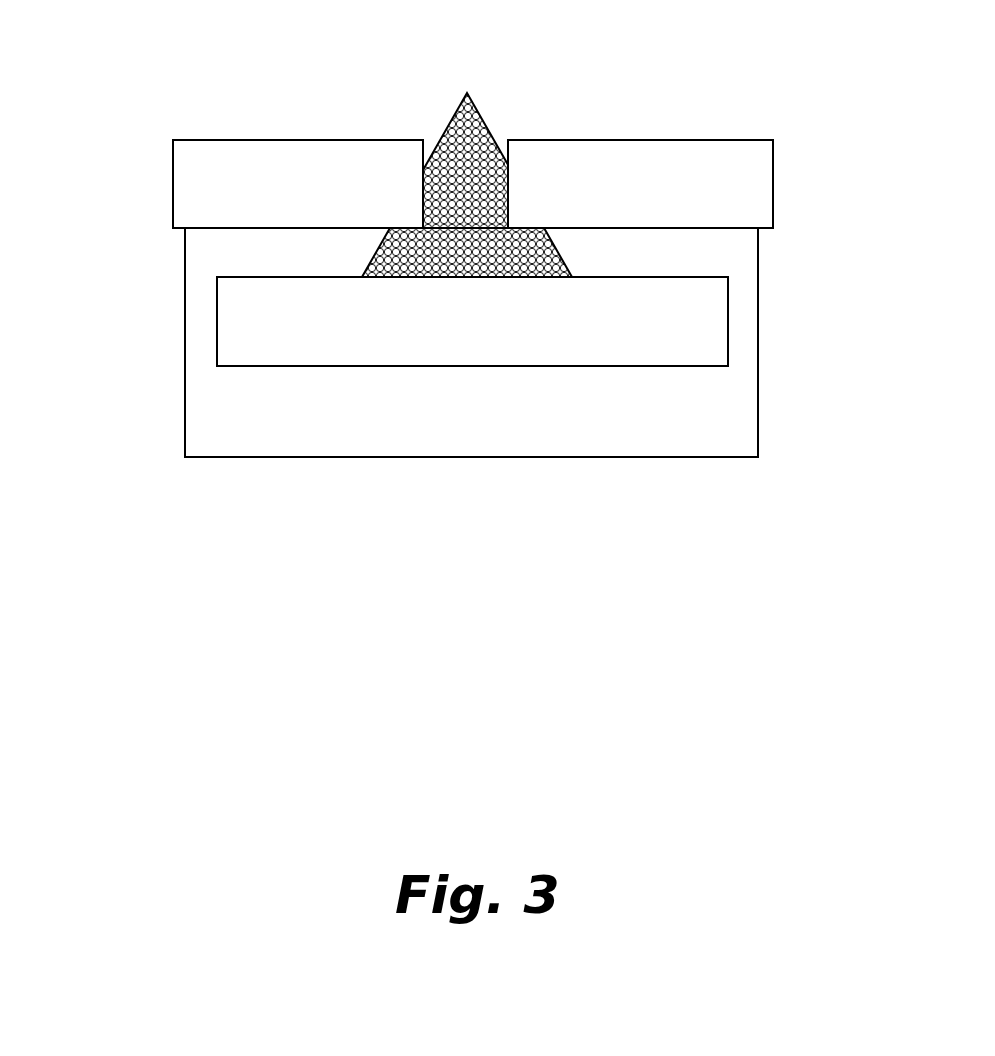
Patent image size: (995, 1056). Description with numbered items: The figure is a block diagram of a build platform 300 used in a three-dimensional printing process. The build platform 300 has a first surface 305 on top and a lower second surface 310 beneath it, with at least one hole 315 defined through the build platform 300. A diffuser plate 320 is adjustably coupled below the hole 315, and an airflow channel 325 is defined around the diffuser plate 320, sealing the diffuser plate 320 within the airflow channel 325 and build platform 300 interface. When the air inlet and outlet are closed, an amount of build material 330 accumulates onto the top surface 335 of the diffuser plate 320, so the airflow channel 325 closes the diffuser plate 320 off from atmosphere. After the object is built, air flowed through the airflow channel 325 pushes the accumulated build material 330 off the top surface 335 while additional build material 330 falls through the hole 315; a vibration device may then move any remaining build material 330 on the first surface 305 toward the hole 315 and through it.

The build platform 300 is at (275, 165).
The first surface 305 is at (688, 140).
The lower second surface 310 is at (203, 228).
The hole 315 is at (430, 135).
The diffuser plate 320 is at (472, 321).
The airflow channel 325 is at (471, 411).
The build material 330 is at (457, 200).
The top surface 335 is at (692, 277).